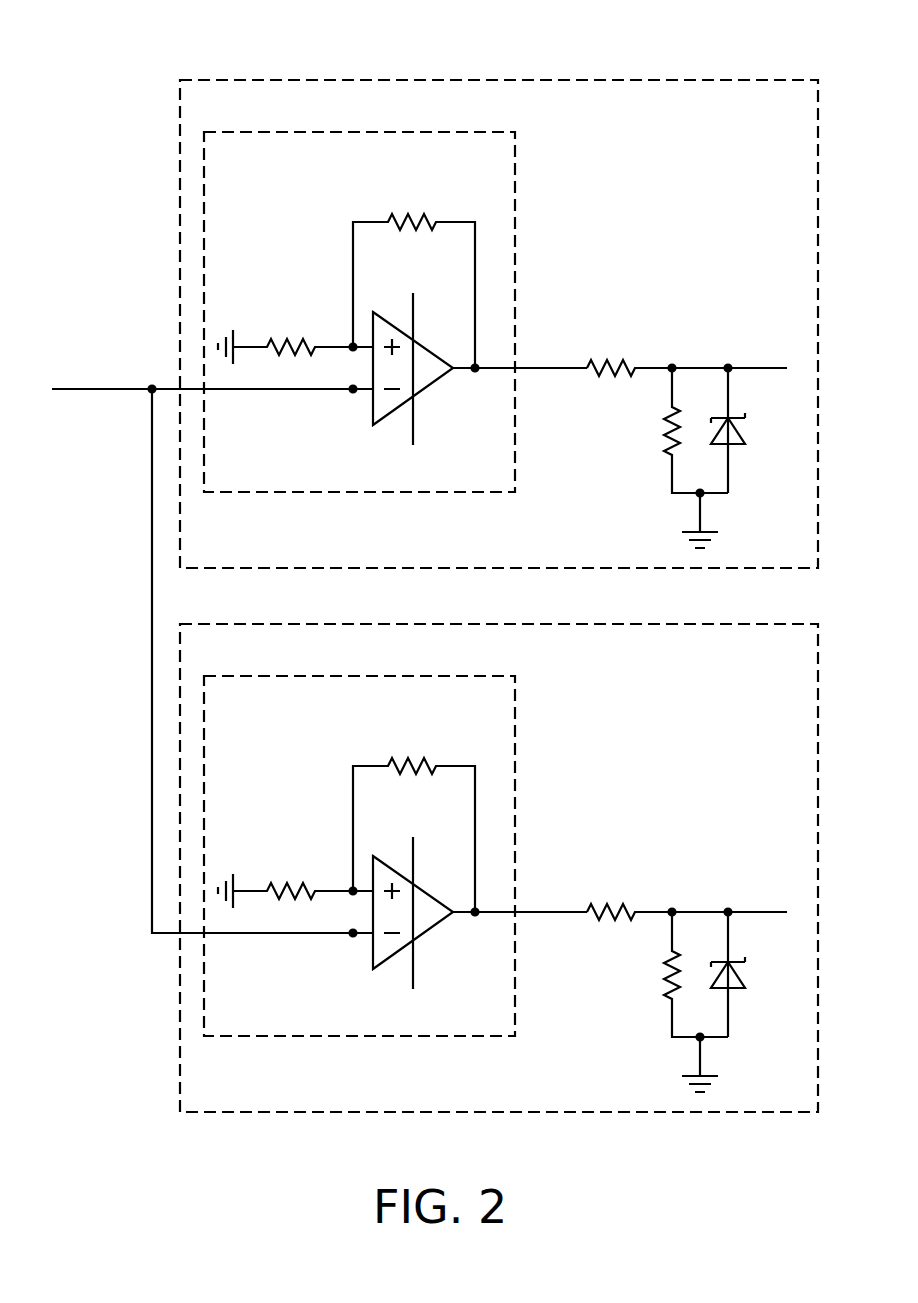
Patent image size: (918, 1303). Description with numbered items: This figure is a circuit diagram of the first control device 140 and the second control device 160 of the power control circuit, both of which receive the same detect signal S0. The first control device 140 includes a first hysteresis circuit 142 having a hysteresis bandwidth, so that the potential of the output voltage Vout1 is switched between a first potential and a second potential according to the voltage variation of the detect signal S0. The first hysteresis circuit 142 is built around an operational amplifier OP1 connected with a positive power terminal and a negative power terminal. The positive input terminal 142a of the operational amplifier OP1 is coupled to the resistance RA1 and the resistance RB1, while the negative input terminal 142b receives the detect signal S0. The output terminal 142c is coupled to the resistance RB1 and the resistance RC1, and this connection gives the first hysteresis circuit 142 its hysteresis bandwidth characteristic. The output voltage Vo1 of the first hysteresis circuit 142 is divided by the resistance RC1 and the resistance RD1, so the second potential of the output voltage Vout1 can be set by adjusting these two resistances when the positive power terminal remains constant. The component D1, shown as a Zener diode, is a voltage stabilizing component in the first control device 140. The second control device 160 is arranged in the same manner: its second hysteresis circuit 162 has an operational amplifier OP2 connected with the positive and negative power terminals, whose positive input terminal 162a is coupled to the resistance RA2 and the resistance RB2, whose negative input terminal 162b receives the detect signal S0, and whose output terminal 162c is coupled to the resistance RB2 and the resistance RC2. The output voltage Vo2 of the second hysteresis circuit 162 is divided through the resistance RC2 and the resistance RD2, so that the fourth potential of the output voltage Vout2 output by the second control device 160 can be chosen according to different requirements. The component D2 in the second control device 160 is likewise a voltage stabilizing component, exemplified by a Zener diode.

The first control device 140 is at (183, 78).
The first hysteresis circuit 142 is at (207, 130).
The positive input terminal 142a is at (353, 346).
The negative input terminal 142b is at (353, 392).
The output terminal 142c is at (475, 372).
The resistance RA1 is at (290, 338).
The resistance RB1 is at (412, 214).
The resistance RC1 is at (619, 362).
The resistance RD1 is at (665, 431).
The voltage stabilizing component D1 is at (745, 432).
The operational amplifier OP1 is at (418, 392).
The output voltage of the first hysteresis circuit Vo1 is at (569, 364).
The output voltage Vout1 is at (777, 364).
The detect signal S0 is at (90, 384).
The second control device 160 is at (183, 622).
The second hysteresis circuit 162 is at (207, 674).
The positive input terminal 162a is at (353, 890).
The negative input terminal 162b is at (353, 936).
The output terminal 162c is at (475, 916).
The resistance RA2 is at (290, 882).
The resistance RB2 is at (412, 758).
The resistance RC2 is at (619, 906).
The resistance RD2 is at (665, 975).
The voltage stabilizing component D2 is at (745, 976).
The operational amplifier OP2 is at (418, 936).
The output voltage of the second hysteresis circuit Vo2 is at (569, 908).
The output voltage Vout2 is at (777, 908).